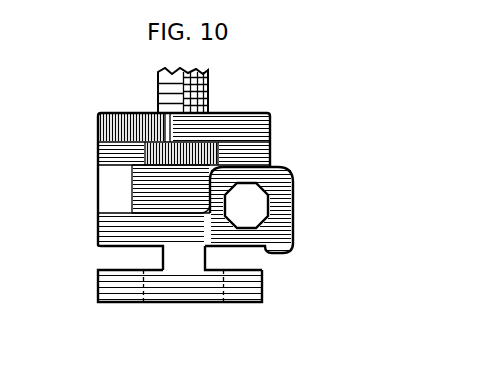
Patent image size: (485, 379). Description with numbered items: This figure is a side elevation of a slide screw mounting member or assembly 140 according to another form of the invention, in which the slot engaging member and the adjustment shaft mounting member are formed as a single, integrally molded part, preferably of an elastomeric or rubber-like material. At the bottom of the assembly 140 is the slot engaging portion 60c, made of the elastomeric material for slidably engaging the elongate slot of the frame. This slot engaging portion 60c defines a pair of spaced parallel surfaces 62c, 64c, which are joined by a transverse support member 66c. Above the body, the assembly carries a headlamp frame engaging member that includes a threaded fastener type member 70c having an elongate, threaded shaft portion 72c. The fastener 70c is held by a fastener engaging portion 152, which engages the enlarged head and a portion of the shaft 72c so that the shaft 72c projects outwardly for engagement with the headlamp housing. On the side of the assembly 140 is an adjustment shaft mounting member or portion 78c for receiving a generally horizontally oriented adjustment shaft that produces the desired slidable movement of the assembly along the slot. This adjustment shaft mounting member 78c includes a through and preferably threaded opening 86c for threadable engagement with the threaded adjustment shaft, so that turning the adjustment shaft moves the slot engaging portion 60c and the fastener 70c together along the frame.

The slot engaging portion 60c is at (208, 212).
The spaced parallel surface 62c is at (262, 256).
The spaced parallel surface 64c is at (263, 266).
The transverse support member 66c is at (162, 261).
The threaded fastener type member 70c is at (192, 88).
The threaded shaft portion 72c is at (163, 86).
The adjustment shaft mounting member 78c is at (295, 195).
The threaded opening 86c is at (269, 203).
The slide screw assembly 140 is at (282, 122).
The fastener engaging portion 152 is at (98, 129).